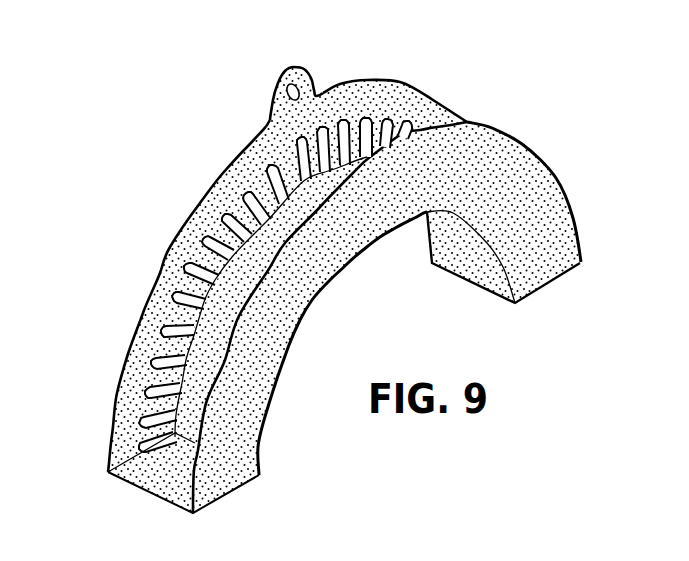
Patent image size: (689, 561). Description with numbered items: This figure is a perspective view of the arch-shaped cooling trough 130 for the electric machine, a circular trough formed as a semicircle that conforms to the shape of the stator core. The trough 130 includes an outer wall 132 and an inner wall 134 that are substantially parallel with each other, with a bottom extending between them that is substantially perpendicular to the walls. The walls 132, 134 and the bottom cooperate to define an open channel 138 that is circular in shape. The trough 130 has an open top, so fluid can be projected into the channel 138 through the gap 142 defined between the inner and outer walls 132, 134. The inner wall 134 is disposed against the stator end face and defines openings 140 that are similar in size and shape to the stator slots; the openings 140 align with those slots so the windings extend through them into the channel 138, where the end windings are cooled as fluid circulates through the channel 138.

The arch-shaped cooling trough 130 is at (234, 138).
The outer wall 132 is at (523, 203).
The inner wall 134 is at (168, 242).
The open channel 138 is at (477, 111).
The openings 140 is at (398, 130).
The gap 142 is at (186, 510).